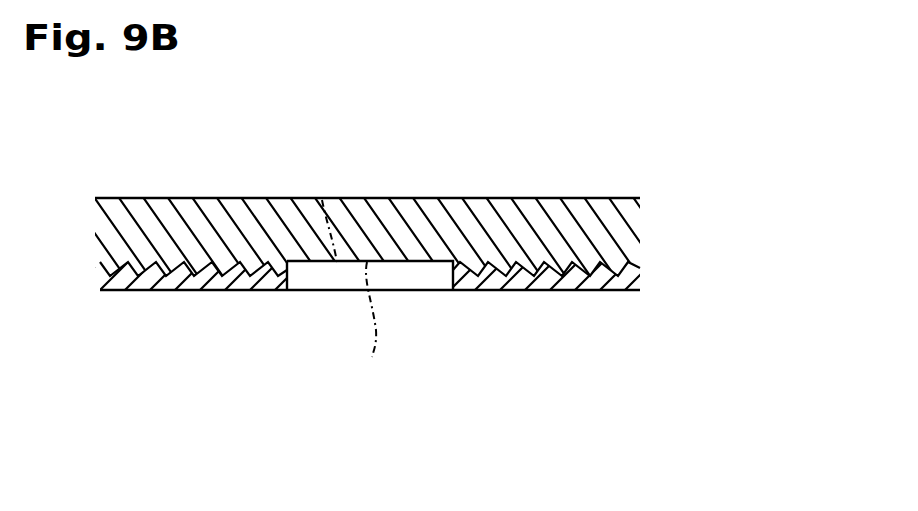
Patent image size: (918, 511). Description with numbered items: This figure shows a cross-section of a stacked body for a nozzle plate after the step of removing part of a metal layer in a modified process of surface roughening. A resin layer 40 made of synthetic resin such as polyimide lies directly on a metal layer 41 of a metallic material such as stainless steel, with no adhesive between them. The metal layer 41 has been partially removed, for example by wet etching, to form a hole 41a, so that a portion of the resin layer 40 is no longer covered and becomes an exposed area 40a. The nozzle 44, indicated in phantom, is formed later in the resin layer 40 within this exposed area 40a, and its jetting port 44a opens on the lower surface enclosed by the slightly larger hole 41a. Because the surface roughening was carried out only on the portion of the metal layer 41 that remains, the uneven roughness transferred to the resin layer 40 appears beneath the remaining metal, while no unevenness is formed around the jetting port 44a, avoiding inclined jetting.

The resin layer 40 is at (625, 233).
The metal layer 41 is at (615, 277).
The exposed area 40a is at (417, 264).
The hole 41a is at (290, 275).
The nozzle 44 is at (404, 260).
The jetting port 44a is at (377, 332).